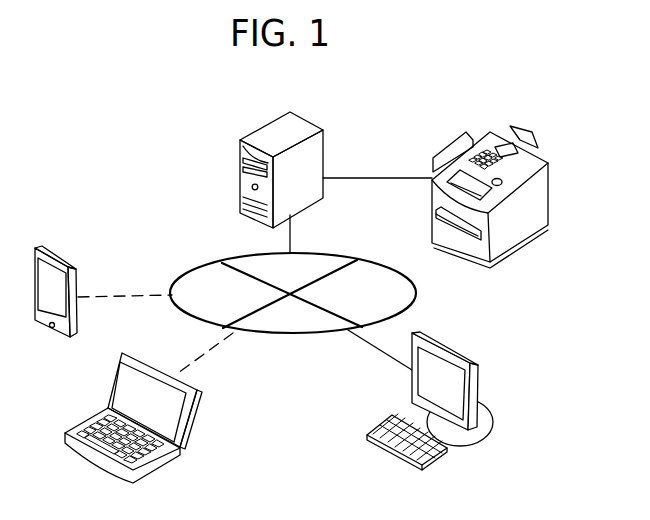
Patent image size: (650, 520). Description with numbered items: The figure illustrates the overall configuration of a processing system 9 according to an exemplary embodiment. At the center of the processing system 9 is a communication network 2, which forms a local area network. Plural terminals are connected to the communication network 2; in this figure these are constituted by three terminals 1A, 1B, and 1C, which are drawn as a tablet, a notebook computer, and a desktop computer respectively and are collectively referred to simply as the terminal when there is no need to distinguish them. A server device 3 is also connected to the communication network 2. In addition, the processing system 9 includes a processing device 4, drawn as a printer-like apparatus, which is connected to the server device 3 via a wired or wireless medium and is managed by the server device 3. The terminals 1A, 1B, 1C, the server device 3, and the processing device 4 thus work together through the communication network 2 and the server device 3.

The processing system 9 is at (113, 184).
The communication network 2 is at (350, 253).
The server device 3 is at (323, 160).
The processing device 4 is at (510, 254).
The terminal 1A is at (73, 263).
The terminal 1B is at (187, 432).
The terminal 1C is at (480, 385).